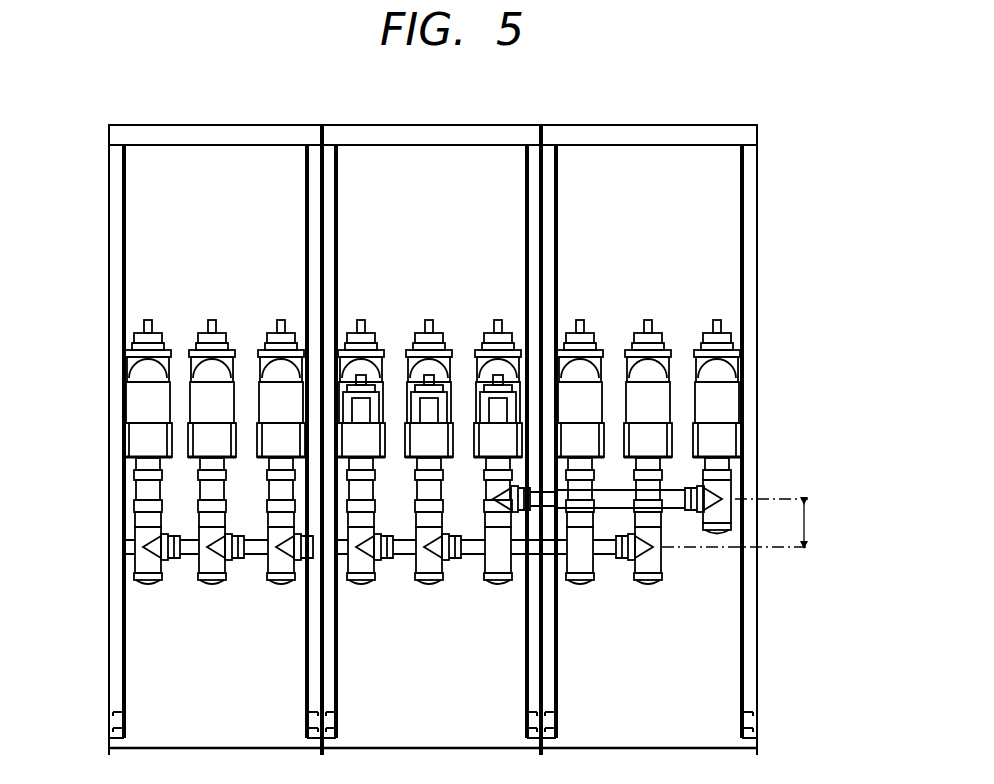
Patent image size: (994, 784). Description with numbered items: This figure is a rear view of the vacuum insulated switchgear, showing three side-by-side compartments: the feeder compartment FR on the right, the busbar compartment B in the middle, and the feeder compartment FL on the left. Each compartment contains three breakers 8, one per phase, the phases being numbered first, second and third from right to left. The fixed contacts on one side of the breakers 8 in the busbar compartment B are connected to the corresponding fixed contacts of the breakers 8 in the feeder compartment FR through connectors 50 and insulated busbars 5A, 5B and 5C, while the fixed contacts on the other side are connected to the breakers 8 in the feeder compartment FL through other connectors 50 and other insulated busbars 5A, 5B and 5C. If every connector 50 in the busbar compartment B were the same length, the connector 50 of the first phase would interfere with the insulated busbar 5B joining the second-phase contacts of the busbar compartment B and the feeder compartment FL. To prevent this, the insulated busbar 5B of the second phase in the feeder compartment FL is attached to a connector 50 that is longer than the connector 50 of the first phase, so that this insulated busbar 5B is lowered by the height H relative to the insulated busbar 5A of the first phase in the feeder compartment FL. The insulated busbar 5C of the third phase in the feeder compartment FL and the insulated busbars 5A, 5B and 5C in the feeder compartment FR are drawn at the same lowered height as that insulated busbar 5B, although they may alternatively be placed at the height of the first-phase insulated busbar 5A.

The breaker 8 is at (140, 398).
The connector 50 is at (475, 508).
The insulated busbar 5A is at (288, 548).
The insulated busbar 5B is at (260, 557).
The insulated busbar 5C is at (192, 560).
The height difference H is at (748, 523).
The feeder compartment FR is at (242, 125).
The busbar compartment B is at (445, 125).
The feeder compartment FL is at (680, 125).